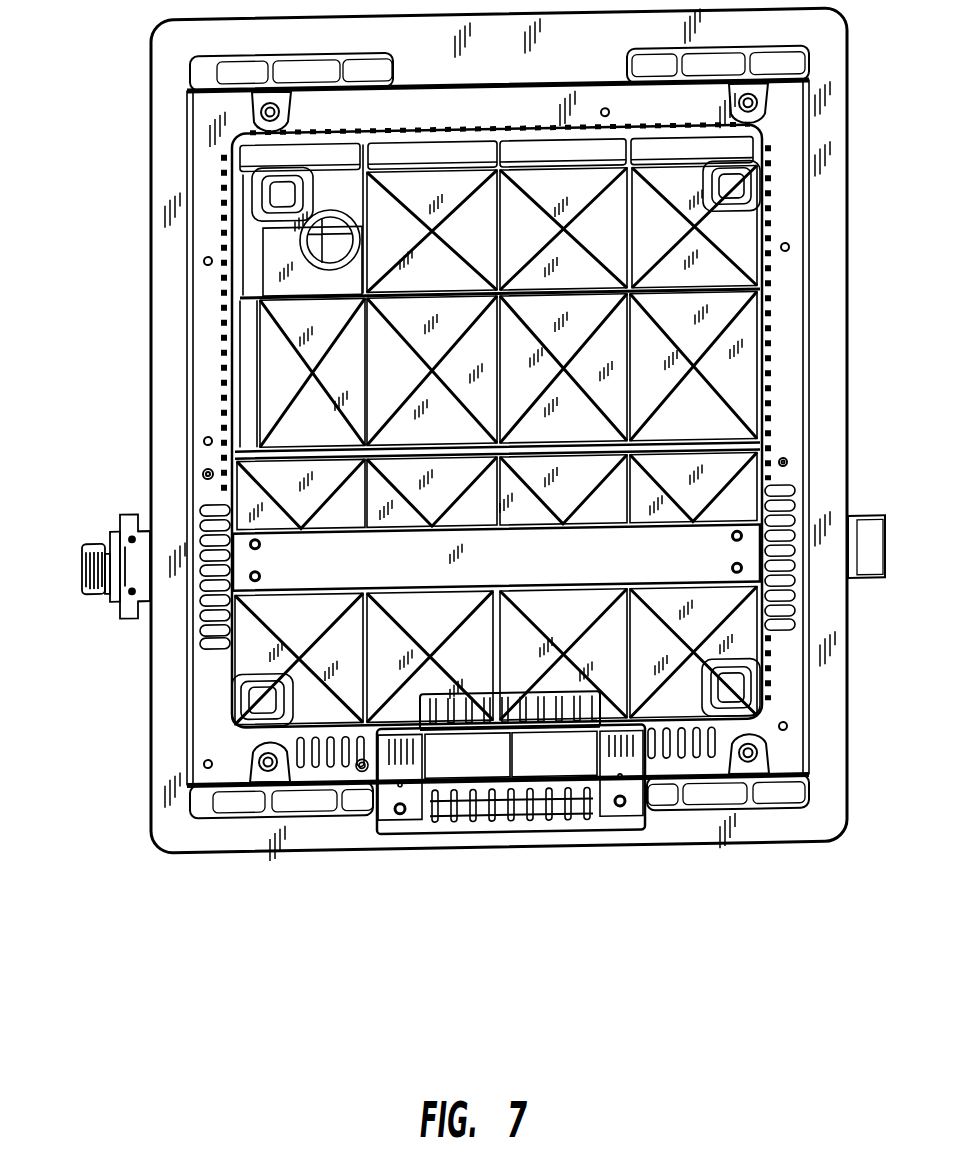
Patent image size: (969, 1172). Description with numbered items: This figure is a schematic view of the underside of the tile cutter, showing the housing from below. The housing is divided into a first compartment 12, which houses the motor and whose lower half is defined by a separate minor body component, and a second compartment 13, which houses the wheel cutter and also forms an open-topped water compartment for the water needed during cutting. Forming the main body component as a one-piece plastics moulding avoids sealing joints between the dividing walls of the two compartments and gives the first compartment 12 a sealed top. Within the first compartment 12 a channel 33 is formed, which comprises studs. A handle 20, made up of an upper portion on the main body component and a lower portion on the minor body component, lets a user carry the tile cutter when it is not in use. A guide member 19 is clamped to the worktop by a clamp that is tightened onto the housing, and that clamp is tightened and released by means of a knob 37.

The first compartment 12 is at (187, 685).
The second compartment 13 is at (200, 323).
The guide member 19 is at (122, 608).
The handle 20 is at (543, 832).
The channel 33 is at (458, 563).
The knob 37 is at (87, 538).